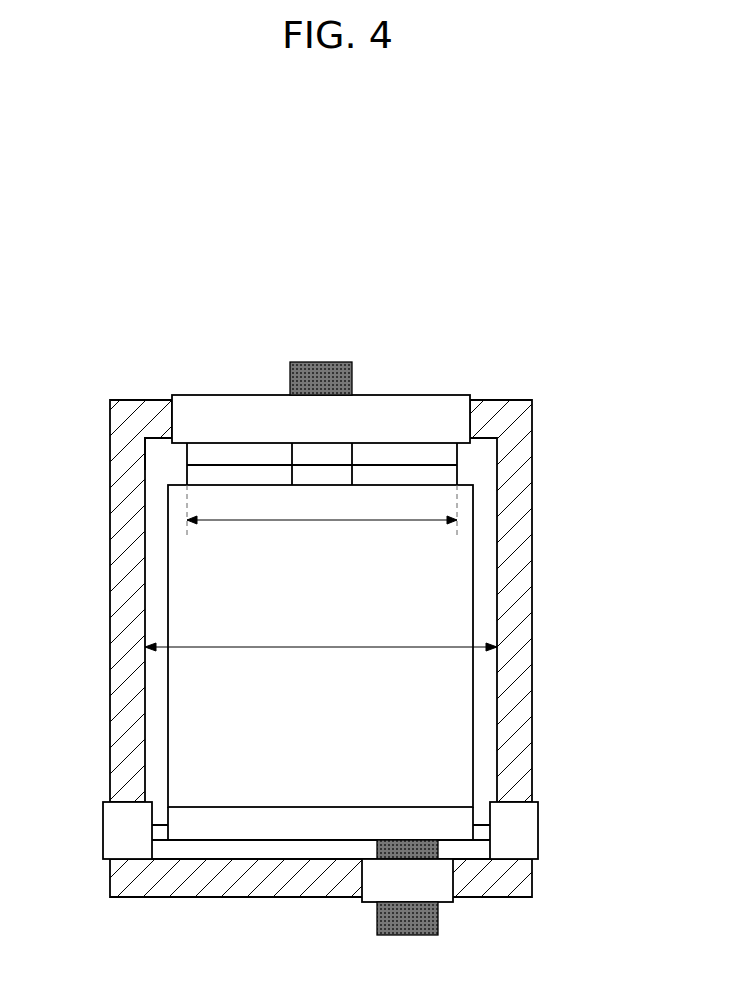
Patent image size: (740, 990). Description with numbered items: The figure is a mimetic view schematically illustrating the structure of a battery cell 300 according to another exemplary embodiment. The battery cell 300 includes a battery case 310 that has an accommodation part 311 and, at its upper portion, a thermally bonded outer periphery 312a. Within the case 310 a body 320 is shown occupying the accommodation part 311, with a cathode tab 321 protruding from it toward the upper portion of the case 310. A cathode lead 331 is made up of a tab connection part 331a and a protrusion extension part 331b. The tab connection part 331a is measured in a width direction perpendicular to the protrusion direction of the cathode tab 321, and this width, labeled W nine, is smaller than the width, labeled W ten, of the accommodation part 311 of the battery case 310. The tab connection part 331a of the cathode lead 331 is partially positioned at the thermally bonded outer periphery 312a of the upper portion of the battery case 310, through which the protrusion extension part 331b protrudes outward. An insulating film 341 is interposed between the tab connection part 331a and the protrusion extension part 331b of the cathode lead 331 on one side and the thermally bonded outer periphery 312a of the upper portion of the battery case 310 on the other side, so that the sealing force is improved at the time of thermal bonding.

The battery cell 300 is at (144, 290).
The battery case 310 is at (359, 612).
The accommodation part 311 is at (483, 684).
The thermally bonded outer periphery 312a is at (140, 418).
The electrode assembly 320 is at (168, 712).
The cathode tab 321 is at (352, 473).
The cathode lead 331 is at (422, 417).
The tab connection part 331a is at (457, 456).
The protrusion extension part 331b is at (352, 372).
The insulating film 341 is at (214, 395).